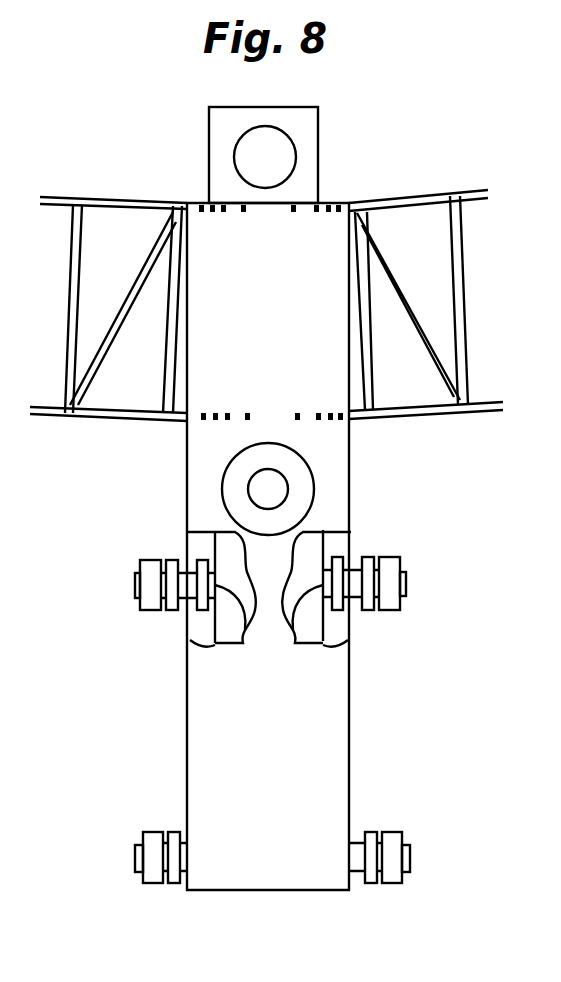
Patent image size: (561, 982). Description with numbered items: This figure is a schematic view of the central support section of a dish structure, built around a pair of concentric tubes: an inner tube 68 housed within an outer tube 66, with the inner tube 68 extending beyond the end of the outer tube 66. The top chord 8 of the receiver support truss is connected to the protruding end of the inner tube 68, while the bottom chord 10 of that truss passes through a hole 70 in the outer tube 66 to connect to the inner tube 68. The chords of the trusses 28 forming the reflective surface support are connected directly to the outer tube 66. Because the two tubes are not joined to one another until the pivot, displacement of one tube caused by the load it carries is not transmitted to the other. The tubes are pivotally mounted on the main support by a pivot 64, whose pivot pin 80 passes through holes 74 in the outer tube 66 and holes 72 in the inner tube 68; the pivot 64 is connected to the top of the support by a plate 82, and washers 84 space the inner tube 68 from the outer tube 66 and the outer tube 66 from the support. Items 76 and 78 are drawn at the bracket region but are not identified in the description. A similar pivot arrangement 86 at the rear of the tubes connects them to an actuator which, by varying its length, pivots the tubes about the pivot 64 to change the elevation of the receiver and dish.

The top chord 8 is at (236, 157).
The bottom chord 10 is at (248, 488).
The trusses 28 is at (48, 197).
The pivot 64 is at (137, 603).
The outer tube 66 is at (350, 447).
The inner tube 68 is at (318, 128).
The hole 70 is at (288, 492).
The holes in inner tube 72 is at (245, 640).
The holes in outer tube 74 is at (182, 577).
The right bracket plate 76 is at (334, 643).
The left bracket plate 78 is at (208, 643).
The pivot pin 80 is at (135, 584).
The plate 82 is at (150, 558).
The washers 84 is at (199, 557).
The pivot arrangement 86 is at (410, 853).